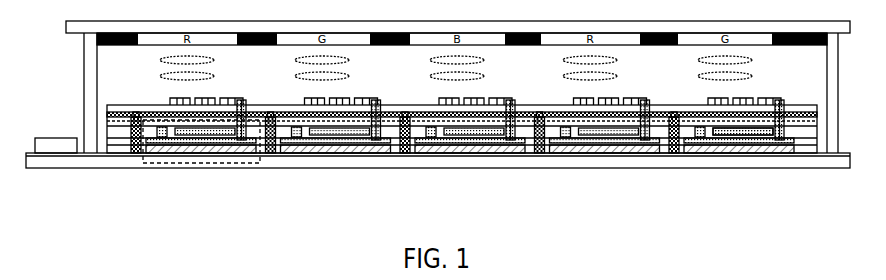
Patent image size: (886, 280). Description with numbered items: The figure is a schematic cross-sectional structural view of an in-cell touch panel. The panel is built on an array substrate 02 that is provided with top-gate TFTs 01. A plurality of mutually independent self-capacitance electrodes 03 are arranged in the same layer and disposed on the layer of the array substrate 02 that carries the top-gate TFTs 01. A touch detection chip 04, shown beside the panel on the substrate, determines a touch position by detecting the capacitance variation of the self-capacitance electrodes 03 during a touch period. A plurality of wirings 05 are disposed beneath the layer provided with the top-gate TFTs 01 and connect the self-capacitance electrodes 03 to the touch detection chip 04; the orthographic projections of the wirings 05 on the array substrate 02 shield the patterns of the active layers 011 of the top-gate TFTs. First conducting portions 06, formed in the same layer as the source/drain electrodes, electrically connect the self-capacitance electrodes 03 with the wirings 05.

The top-gate TFT 01 is at (230, 175).
The array substrate 02 is at (438, 185).
The self-capacitance electrode 03 is at (562, 115).
The touch detection chip 04 is at (81, 177).
The wiring 05 is at (671, 137).
The first conducting portion 06 is at (273, 140).
The active layer 011 is at (733, 140).